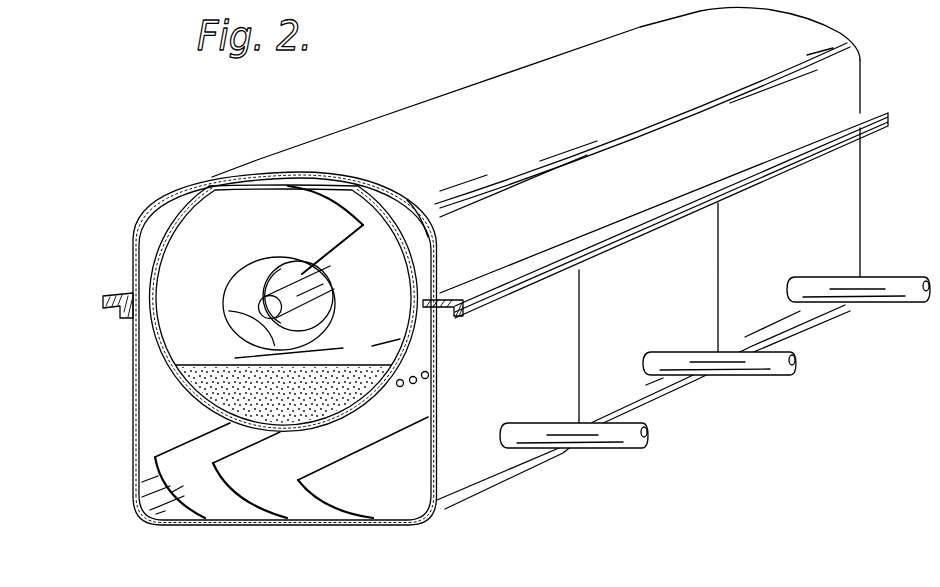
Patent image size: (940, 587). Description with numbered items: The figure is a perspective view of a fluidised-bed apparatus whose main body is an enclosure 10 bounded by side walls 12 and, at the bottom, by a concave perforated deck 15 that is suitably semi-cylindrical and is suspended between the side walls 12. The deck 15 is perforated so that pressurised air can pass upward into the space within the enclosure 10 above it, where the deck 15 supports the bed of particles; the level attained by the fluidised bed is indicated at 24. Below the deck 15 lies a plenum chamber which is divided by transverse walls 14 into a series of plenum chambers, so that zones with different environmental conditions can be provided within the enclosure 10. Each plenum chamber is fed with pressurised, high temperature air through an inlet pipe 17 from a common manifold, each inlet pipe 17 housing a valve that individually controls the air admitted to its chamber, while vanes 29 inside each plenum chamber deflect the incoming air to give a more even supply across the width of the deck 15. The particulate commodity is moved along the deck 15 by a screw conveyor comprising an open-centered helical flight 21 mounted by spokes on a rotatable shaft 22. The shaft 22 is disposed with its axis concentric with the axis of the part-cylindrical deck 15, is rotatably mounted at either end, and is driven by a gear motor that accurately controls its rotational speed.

The enclosure 10 is at (493, 90).
The side walls 12 is at (650, 150).
The transverse walls 14 is at (580, 337).
The concave perforated deck 15 is at (197, 407).
The inlet pipe 17 is at (600, 438).
The open-centered helical flight 21 is at (266, 241).
The rotatable shaft 22 is at (333, 306).
The level of the fluidised bed 24 is at (203, 363).
The vanes 29 is at (202, 493).